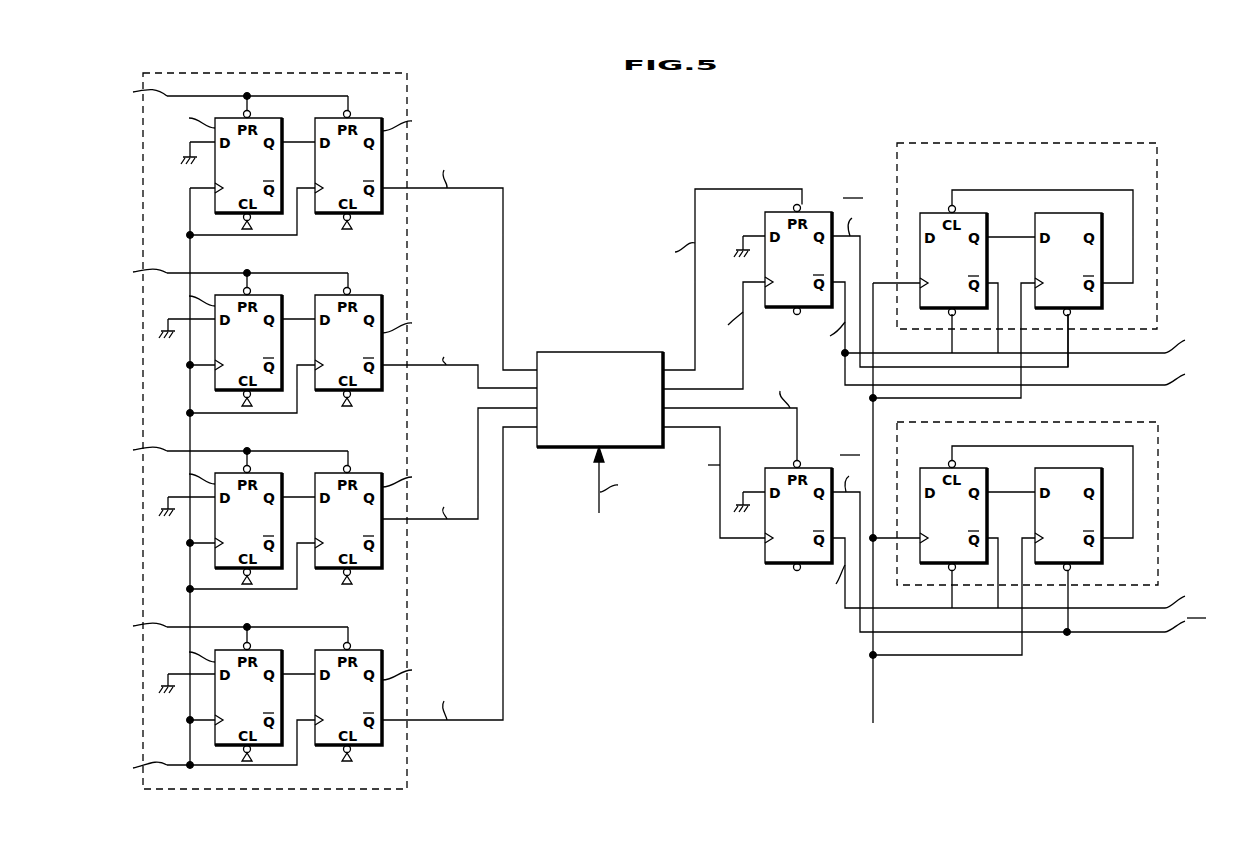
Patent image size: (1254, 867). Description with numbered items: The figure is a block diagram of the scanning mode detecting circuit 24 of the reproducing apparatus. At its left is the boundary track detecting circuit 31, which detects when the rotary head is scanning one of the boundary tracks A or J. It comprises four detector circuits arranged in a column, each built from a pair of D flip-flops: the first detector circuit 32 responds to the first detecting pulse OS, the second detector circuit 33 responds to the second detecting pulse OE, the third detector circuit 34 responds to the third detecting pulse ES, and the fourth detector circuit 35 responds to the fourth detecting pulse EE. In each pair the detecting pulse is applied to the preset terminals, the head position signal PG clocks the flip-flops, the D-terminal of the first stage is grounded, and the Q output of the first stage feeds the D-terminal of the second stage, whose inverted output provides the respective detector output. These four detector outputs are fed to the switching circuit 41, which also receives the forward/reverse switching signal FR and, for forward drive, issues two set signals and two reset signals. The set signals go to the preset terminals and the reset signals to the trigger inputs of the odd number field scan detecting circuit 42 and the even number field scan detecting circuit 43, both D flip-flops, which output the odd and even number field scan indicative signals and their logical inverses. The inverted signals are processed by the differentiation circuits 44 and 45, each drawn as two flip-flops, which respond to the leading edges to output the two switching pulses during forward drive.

The scanning mode detecting circuit 24 is at (722, 150).
The boundary track detecting circuit 31 is at (407, 300).
The first detector circuit 32 is at (346, 224).
The second detector circuit 33 is at (345, 336).
The third detector circuit 34 is at (345, 500).
The fourth detector circuit 35 is at (345, 597).
The switching circuit 41 is at (641, 352).
The odd number field scan detecting circuit 42 is at (765, 222).
The even number field scan detecting circuit 43 is at (765, 470).
The differentiation circuit 44 is at (1157, 165).
The differentiation circuit 45 is at (1158, 445).